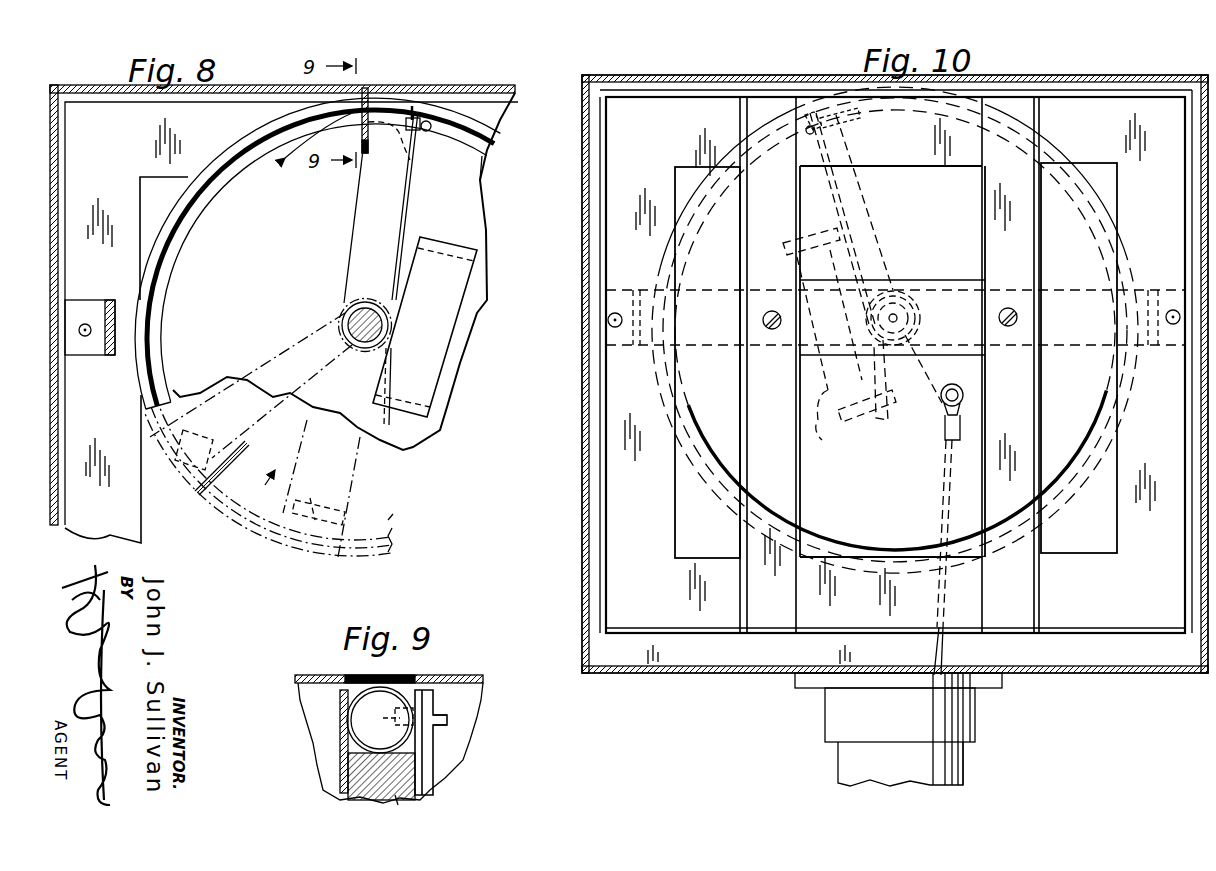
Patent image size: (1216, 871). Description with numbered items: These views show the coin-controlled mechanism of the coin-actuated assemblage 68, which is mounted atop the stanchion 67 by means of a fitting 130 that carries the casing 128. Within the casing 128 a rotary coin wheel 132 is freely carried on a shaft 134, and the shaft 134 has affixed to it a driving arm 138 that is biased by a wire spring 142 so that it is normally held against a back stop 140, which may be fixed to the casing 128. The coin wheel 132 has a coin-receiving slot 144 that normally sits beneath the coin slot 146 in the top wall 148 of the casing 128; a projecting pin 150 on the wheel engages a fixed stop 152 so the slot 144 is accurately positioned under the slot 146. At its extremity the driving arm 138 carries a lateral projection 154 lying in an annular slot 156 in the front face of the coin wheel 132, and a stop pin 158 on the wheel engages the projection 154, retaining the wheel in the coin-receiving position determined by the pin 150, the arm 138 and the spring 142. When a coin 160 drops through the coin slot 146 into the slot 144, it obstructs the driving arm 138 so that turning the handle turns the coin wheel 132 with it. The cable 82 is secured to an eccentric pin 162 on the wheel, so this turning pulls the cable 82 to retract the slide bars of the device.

In FIG. 10, the stanchion 67 is at (960, 768).
In FIG. 10, the coin-actuated assemblage 68 is at (560, 532).
In FIG. 10, the cable 82 is at (944, 580).
In FIG. 10, the casing 128 is at (582, 450).
In FIG. 10, the fitting 130 is at (975, 716).
In FIG. 8, the coin wheel 132 is at (238, 142).
In FIG. 9, the coin wheel 132 is at (394, 798).
In FIG. 10, the coin wheel 132 is at (727, 470).
In FIG. 8, the shaft 134 is at (344, 316).
In FIG. 8, the driving arm 138 is at (360, 230).
In FIG. 9, the driving arm 138 is at (430, 777).
In FIG. 10, the driving arm 138 is at (905, 225).
In FIG. 8, the back stop 140 is at (435, 333).
In FIG. 10, the back stop 140 is at (839, 339).
In FIG. 8, the wire spring 142 is at (407, 210).
In FIG. 9, the coin-receiving slot 144 is at (355, 755).
In FIG. 8, the coin slot 146 is at (367, 88).
In FIG. 9, the coin slot 146 is at (404, 678).
In FIG. 8, the top wall 148 is at (470, 86).
In FIG. 9, the top wall 148 is at (478, 677).
In FIG. 10, the projecting pin 150 is at (748, 288).
In FIG. 10, the stop 152 is at (900, 348).
In FIG. 8, the lateral projection 154 is at (413, 150).
In FIG. 9, the lateral projection 154 is at (428, 714).
In FIG. 8, the annular slot 156 is at (483, 158).
In FIG. 9, the annular slot 156 is at (380, 720).
In FIG. 8, the stop pin 158 is at (428, 132).
In FIG. 9, the stop pin 158 is at (404, 716).
In FIG. 10, the stop pin 158 is at (805, 128).
In FIG. 8, the coin 160 is at (362, 118).
In FIG. 9, the coin 160 is at (352, 735).
In FIG. 10, the eccentric pin 162 is at (921, 388).